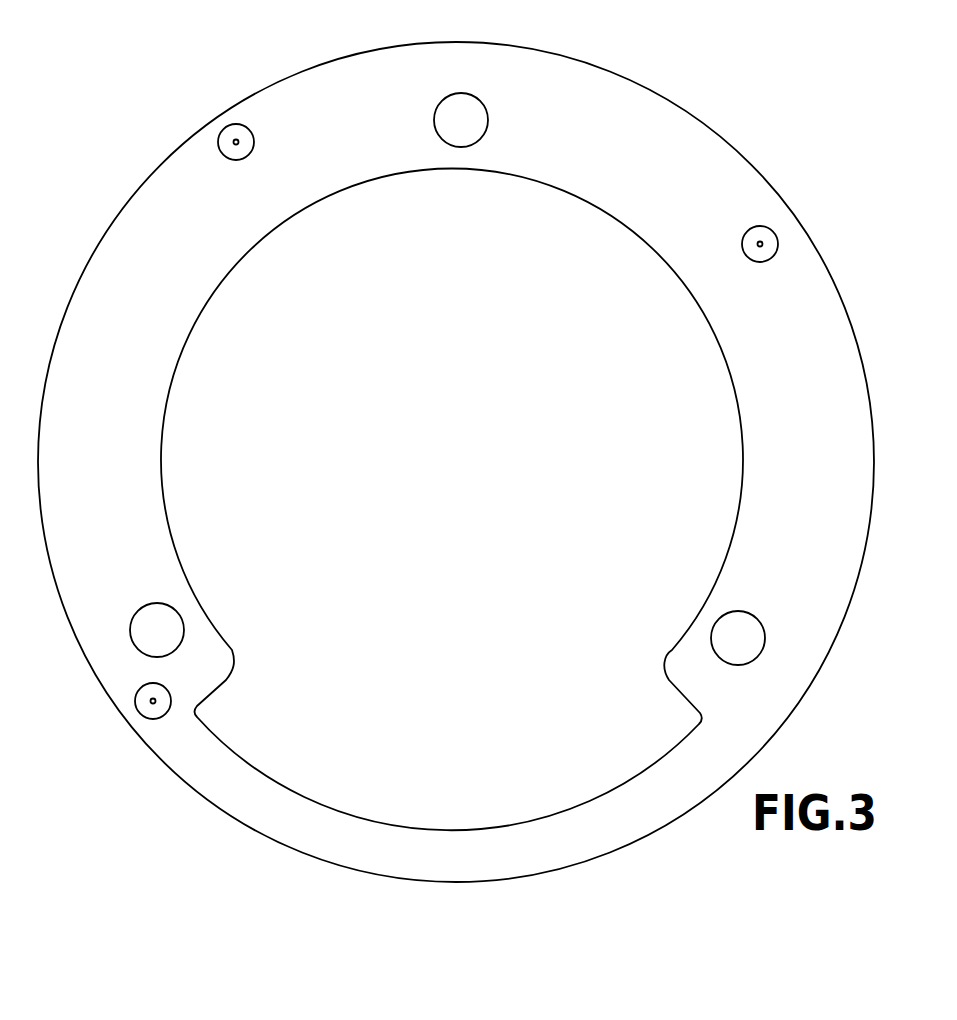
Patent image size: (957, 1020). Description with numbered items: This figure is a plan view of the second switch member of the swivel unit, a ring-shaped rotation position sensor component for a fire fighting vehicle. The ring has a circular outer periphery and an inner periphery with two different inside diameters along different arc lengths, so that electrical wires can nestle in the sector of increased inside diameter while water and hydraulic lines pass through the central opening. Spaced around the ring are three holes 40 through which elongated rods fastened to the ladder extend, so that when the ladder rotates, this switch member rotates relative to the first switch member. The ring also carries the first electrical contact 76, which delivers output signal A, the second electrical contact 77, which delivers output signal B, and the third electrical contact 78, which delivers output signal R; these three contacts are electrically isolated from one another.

The holes 40 is at (488, 110).
The first electrical contact 76 is at (778, 241).
The second electrical contact 77 is at (157, 720).
The third electrical contact 78 is at (232, 124).